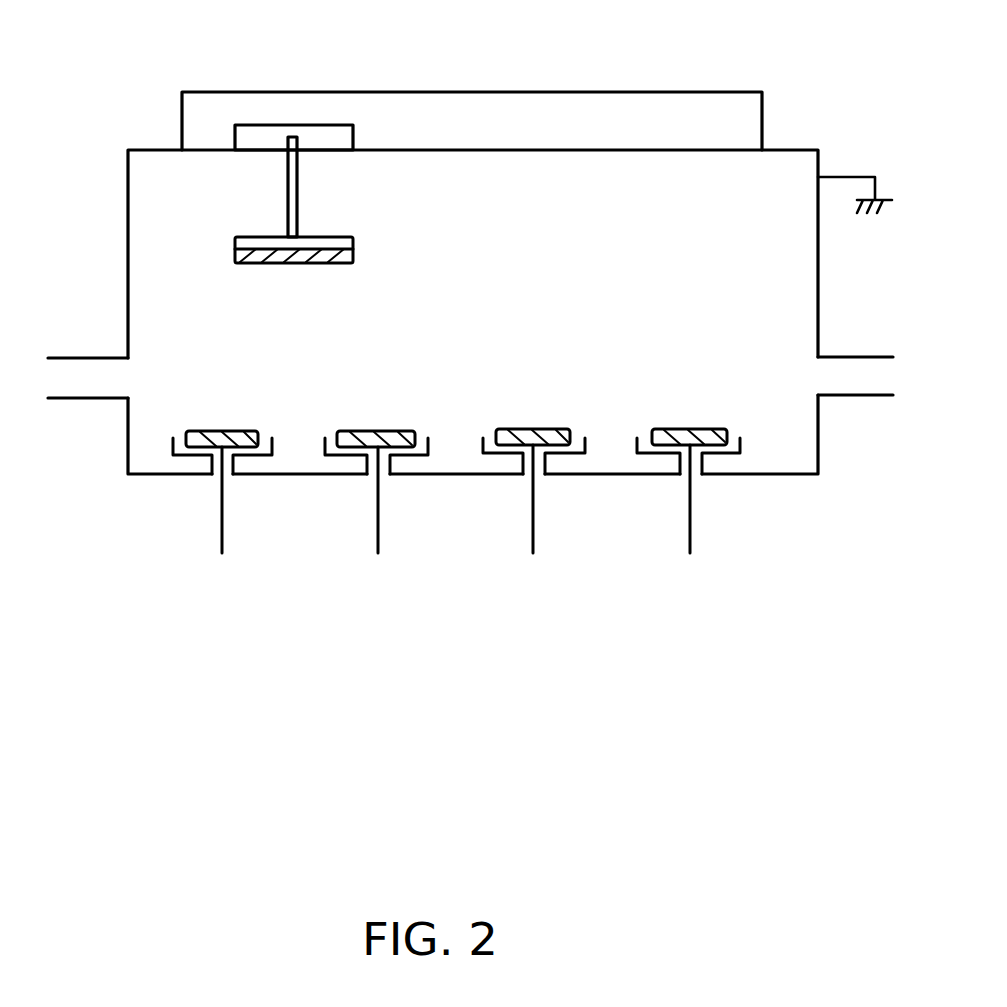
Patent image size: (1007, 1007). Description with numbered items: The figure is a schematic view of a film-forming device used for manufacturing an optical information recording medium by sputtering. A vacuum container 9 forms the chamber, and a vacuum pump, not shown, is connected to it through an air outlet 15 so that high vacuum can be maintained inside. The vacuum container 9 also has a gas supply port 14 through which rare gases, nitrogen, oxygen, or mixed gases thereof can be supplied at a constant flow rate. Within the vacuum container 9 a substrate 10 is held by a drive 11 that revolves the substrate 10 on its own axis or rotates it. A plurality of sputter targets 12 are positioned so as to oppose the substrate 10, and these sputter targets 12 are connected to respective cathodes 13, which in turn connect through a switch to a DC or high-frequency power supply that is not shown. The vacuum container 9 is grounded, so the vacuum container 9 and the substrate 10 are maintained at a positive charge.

The vacuum container 9 is at (790, 148).
The substrate 10 is at (354, 253).
The drive 11 is at (342, 124).
The sputter targets 12 is at (357, 433).
The cathodes 13 is at (223, 508).
The gas supply port 14 is at (80, 372).
The air outlet 15 is at (858, 372).